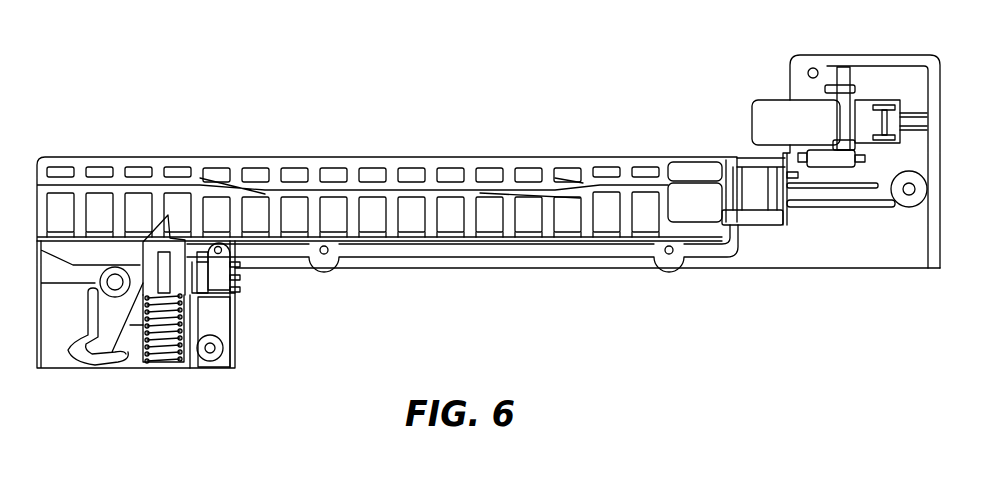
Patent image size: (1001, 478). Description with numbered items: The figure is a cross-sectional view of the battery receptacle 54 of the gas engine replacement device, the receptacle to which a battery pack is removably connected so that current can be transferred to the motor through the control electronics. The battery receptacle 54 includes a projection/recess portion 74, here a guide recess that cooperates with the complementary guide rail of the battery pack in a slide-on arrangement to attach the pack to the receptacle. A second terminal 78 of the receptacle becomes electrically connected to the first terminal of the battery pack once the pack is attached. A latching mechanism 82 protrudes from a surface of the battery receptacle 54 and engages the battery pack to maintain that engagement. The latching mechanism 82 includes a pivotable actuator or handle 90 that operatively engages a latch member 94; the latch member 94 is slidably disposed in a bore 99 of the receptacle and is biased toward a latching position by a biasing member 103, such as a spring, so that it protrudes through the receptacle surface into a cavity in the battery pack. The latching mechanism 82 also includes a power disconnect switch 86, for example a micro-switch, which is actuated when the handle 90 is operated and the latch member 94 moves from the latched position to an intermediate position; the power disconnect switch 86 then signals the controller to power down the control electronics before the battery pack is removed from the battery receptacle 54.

The battery receptacle 54 is at (272, 96).
The projection/recess portion 74 is at (492, 216).
The second terminal 78 is at (692, 200).
The latching mechanism 82 is at (38, 373).
The power disconnect switch 86 is at (218, 293).
The handle 90 is at (67, 332).
The latch member 94 is at (163, 263).
The bore 99 is at (213, 351).
The biasing member 103 is at (162, 345).